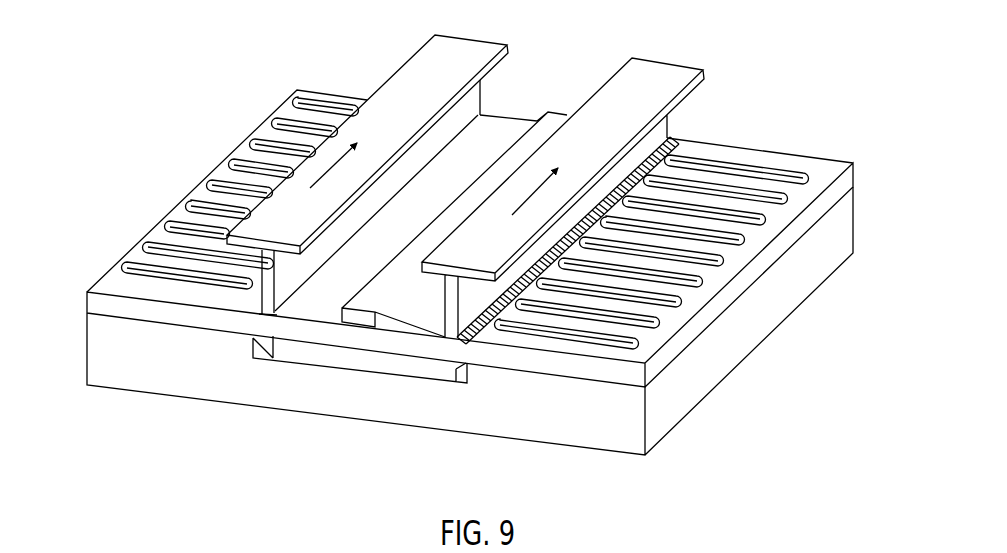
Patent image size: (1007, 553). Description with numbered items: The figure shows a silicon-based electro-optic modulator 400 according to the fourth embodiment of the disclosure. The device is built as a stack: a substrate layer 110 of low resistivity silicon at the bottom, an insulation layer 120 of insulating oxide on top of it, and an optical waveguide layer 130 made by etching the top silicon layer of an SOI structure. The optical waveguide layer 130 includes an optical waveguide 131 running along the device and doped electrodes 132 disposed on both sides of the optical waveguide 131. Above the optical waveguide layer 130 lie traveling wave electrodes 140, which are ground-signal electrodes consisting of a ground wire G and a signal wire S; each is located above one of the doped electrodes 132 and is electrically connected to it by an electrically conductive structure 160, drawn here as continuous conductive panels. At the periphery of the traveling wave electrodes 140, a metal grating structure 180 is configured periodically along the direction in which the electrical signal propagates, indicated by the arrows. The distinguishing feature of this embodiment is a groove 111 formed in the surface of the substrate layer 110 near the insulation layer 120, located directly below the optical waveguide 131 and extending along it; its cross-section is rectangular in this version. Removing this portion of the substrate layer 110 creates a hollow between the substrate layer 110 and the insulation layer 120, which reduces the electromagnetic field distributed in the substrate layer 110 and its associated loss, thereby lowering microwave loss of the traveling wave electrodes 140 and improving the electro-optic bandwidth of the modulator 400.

The silicon-based electro-optic modulator 400 is at (74, 45).
The substrate layer 110 is at (822, 251).
The groove 111 is at (458, 387).
The insulation layer 120 is at (745, 283).
The optical waveguide layer 130 is at (326, 460).
The optical waveguide 131 is at (343, 318).
The doped electrodes 132 is at (278, 297).
The traveling wave electrodes 140 is at (246, 245).
The electrically conductive structures 160 is at (445, 338).
The metal grating structure 180 is at (160, 280).